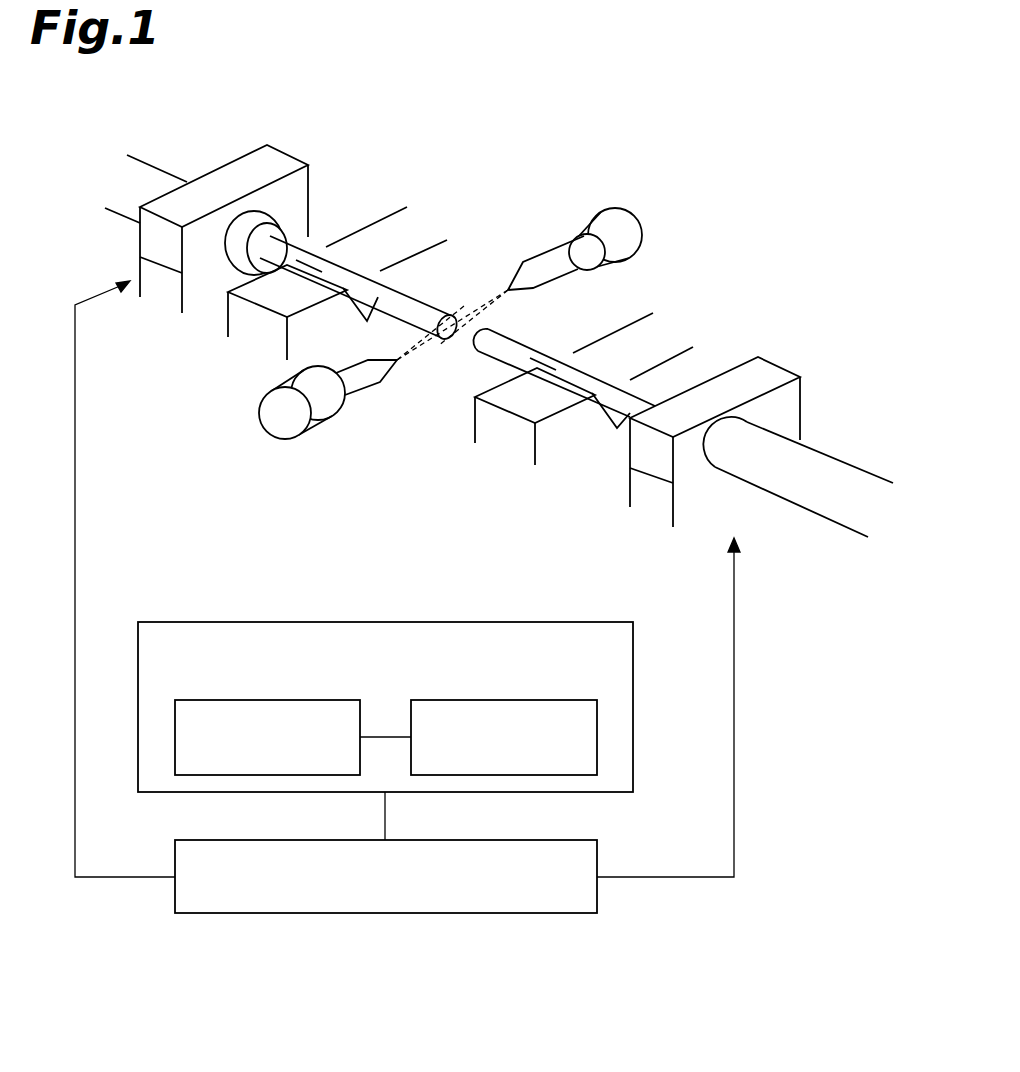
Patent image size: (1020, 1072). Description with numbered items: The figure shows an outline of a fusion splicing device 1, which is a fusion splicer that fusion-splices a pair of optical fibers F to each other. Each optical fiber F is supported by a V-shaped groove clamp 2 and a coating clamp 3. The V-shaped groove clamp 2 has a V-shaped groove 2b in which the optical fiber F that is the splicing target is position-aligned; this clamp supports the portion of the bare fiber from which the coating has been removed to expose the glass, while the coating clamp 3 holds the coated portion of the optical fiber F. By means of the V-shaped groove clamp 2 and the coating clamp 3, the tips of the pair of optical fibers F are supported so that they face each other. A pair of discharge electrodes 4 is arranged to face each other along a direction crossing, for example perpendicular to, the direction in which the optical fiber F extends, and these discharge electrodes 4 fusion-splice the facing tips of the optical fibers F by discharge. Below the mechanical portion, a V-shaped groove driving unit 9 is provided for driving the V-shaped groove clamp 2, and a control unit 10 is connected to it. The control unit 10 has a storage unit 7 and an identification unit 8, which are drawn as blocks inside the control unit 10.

The fusion splicing device 1 is at (693, 142).
The V-shaped groove clamp 2 is at (407, 232).
The V-shaped groove 2b is at (367, 307).
The coating clamp 3 is at (247, 164).
The discharge electrodes 4 is at (614, 220).
The optical fiber F is at (314, 262).
The storage unit 7 is at (265, 700).
The identification unit 8 is at (500, 700).
The V-shaped groove driving unit 9 is at (597, 858).
The control unit 10 is at (588, 622).